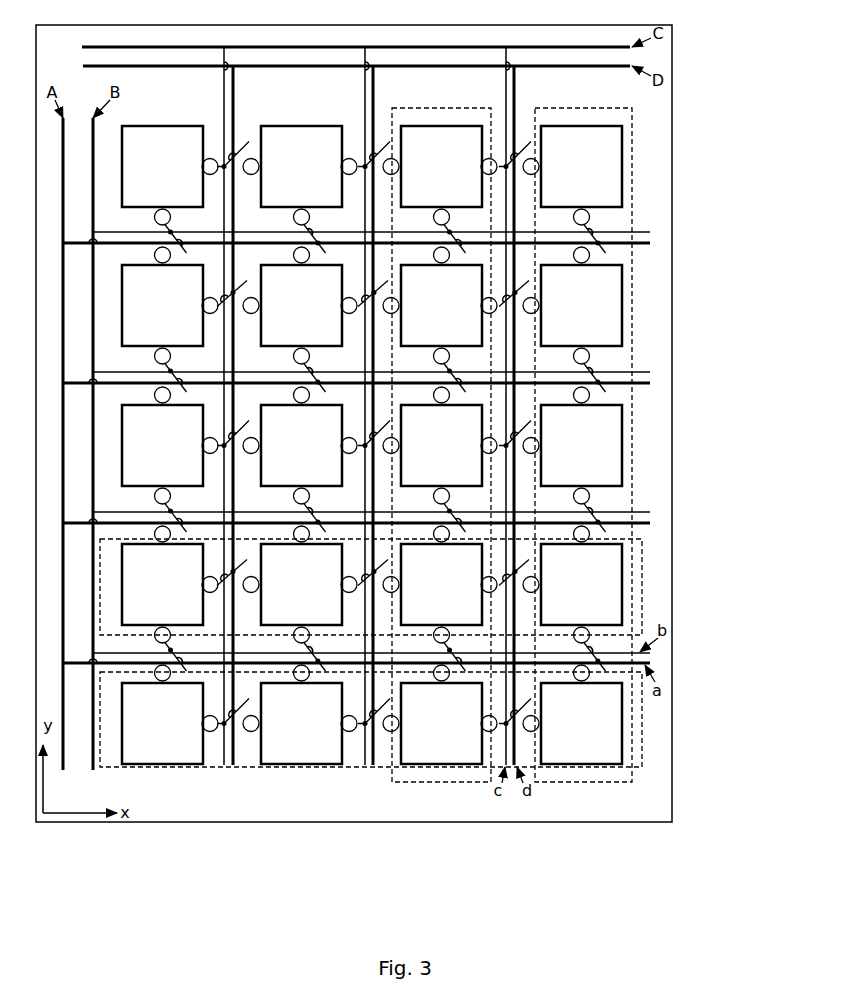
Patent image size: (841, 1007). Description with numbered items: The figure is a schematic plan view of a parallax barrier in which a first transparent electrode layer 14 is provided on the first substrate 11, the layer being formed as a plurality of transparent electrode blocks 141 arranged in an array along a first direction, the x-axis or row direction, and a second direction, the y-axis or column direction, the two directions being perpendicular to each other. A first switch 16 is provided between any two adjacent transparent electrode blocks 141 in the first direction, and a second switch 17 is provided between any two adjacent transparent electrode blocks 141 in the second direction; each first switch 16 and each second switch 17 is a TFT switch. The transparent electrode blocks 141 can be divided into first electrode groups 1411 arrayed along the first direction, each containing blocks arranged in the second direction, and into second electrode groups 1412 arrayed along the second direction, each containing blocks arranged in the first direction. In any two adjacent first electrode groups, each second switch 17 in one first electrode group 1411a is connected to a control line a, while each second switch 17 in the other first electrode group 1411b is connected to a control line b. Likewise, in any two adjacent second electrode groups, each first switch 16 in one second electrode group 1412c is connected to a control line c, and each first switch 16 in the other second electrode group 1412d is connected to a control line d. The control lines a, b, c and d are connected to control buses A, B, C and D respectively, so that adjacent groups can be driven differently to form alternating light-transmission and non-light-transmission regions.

The first substrate 11 is at (647, 105).
The first transparent electrode layer 14 is at (654, 166).
The transparent electrode block 141 is at (602, 165).
The first switch 16 is at (525, 147).
The second switch 17 is at (608, 251).
The first electrode group 1411 is at (512, 498).
The first electrode group 1411a is at (583, 475).
The first electrode group 1411b is at (447, 783).
The second electrode group 1412 is at (452, 653).
The second electrode group 1412c is at (640, 723).
The second electrode group 1412d is at (640, 617).